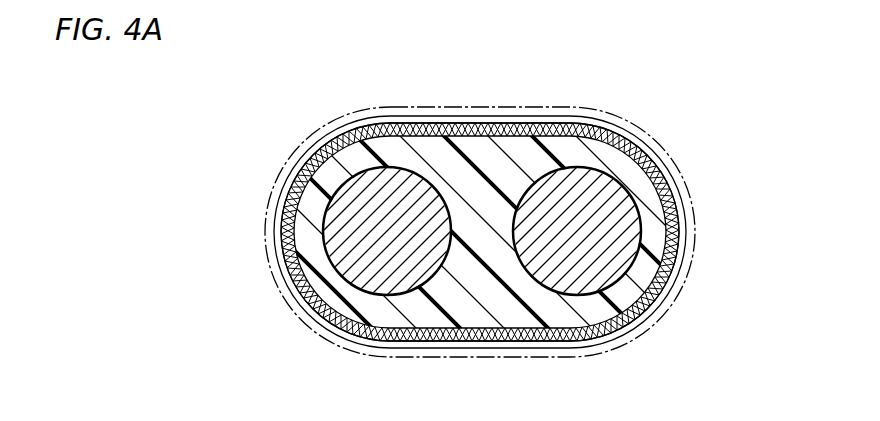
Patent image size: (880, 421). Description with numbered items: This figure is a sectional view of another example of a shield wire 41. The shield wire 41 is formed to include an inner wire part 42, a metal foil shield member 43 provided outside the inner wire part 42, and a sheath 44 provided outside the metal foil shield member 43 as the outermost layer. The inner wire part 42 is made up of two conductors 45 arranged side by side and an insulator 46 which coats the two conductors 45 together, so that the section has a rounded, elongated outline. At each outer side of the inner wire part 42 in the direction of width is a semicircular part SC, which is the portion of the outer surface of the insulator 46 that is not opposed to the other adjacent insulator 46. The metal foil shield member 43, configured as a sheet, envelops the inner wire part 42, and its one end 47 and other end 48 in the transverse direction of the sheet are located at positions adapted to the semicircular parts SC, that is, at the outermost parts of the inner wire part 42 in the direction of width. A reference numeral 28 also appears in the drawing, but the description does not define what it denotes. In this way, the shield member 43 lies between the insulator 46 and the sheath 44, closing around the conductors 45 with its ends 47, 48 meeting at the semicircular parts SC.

The shield wire 41 is at (712, 123).
The inner wire part 42 is at (477, 189).
The metal foil shield member 43 is at (667, 283).
The sheath 44 is at (668, 315).
The conductor 45 is at (415, 197).
The insulator 46 is at (483, 160).
The one end 47 is at (283, 242).
The other end 48 is at (672, 245).
The shield layer 28 is at (578, 120).
The semicircular part SC is at (305, 150).